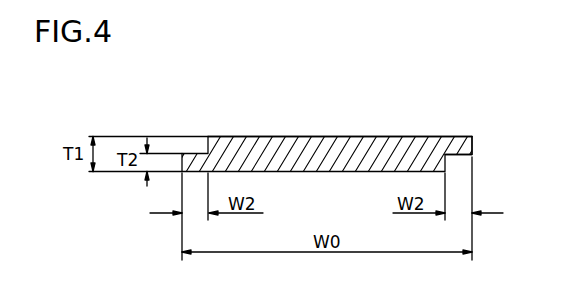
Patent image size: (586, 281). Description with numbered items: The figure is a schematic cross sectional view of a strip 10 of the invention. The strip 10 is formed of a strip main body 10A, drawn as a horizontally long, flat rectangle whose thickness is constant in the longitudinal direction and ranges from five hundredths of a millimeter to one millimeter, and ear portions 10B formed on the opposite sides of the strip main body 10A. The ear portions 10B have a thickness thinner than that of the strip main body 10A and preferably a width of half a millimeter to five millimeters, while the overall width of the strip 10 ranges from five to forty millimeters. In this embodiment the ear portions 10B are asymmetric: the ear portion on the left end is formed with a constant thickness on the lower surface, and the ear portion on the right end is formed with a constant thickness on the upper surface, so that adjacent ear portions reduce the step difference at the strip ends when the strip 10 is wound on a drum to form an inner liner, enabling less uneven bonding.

The strip 10 is at (432, 108).
The strip main body 10A is at (327, 136).
The ear portions 10B is at (472, 147).